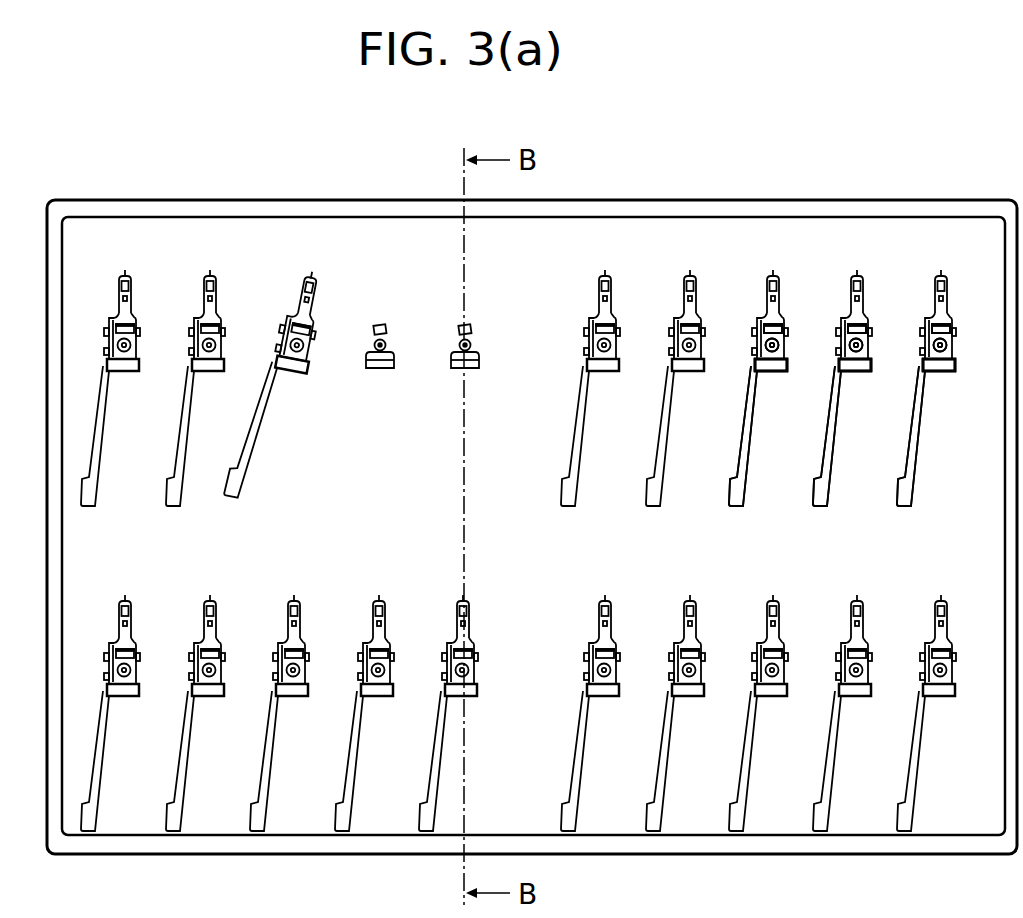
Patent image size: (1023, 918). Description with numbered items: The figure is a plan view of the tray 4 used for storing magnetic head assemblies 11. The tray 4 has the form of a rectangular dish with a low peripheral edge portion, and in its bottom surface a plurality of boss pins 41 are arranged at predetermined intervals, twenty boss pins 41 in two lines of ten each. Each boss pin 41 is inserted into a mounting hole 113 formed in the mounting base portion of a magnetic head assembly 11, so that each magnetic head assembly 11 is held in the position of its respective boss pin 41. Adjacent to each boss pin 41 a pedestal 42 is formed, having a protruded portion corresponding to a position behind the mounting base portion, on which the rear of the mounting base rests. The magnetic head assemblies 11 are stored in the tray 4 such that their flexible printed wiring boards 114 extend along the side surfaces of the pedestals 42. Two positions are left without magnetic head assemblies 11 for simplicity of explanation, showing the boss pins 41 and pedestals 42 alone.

The tray 4 is at (656, 183).
The magnetic head assembly 11 is at (784, 332).
The boss pin 41 is at (386, 346).
The pedestal 42 is at (785, 364).
The mounting hole 113 is at (770, 371).
The flexible printed wiring board 114 is at (748, 455).